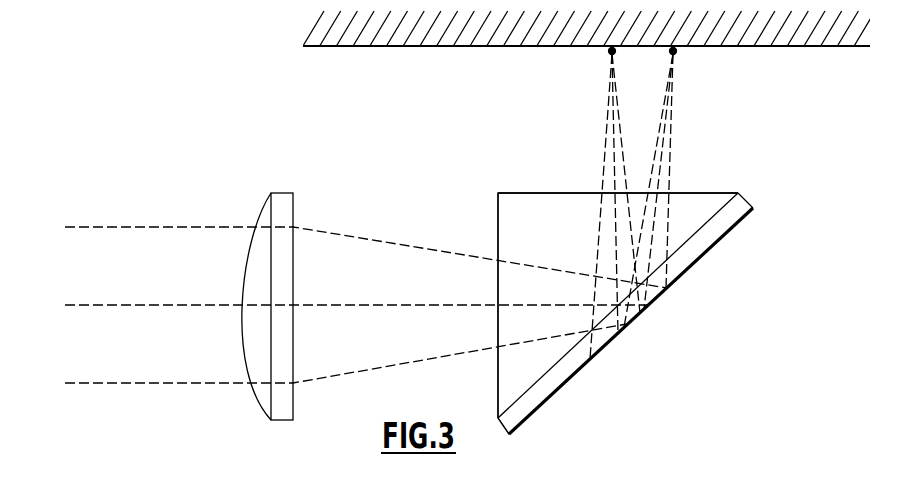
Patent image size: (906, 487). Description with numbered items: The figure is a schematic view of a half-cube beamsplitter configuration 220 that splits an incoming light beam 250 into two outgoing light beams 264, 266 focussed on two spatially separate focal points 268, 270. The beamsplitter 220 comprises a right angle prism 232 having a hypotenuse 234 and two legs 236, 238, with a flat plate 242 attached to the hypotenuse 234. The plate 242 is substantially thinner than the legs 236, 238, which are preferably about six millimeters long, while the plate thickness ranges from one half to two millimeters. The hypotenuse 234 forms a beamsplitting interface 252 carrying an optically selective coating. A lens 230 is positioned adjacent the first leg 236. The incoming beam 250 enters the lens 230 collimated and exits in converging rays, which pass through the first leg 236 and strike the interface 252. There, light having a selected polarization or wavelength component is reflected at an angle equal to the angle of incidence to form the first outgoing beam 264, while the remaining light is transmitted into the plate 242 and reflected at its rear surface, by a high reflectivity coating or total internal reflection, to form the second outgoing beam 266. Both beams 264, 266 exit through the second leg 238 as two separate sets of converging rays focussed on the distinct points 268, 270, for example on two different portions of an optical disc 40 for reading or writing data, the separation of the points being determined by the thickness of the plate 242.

The optical disc 40 is at (795, 49).
The beamsplitter configuration 220 is at (600, 390).
The lens 230 is at (279, 193).
The right angle prism 232 is at (486, 217).
The hypotenuse 234 is at (520, 416).
The first leg 236 is at (498, 378).
The second leg 238 is at (542, 192).
The flat plate 242 is at (594, 348).
The incoming light beam 250 is at (167, 385).
The beamsplitting interface 252 is at (721, 207).
The first outgoing beam 264 is at (603, 137).
The second outgoing beam 266 is at (670, 136).
The focal point 268 is at (610, 58).
The focal point 270 is at (677, 55).